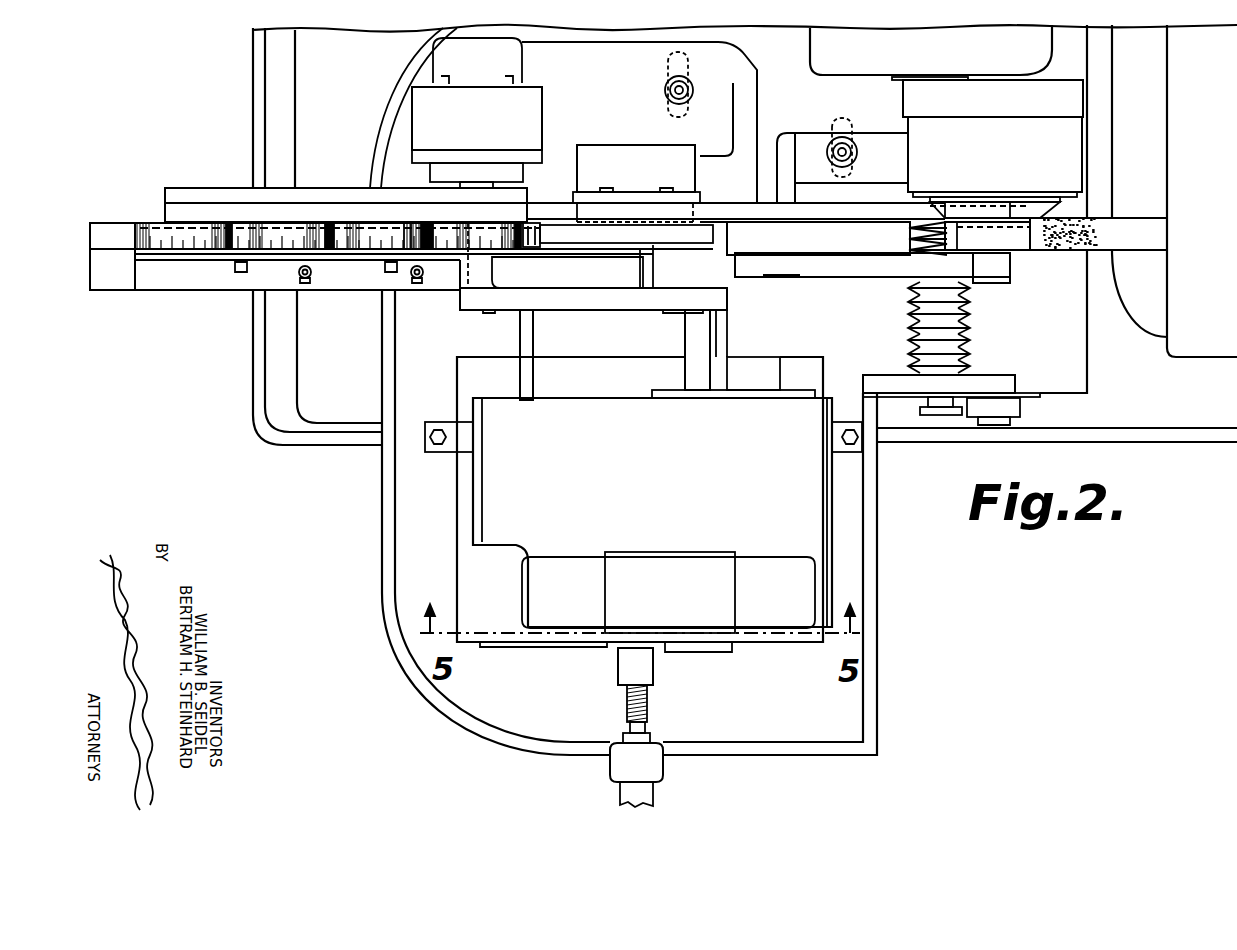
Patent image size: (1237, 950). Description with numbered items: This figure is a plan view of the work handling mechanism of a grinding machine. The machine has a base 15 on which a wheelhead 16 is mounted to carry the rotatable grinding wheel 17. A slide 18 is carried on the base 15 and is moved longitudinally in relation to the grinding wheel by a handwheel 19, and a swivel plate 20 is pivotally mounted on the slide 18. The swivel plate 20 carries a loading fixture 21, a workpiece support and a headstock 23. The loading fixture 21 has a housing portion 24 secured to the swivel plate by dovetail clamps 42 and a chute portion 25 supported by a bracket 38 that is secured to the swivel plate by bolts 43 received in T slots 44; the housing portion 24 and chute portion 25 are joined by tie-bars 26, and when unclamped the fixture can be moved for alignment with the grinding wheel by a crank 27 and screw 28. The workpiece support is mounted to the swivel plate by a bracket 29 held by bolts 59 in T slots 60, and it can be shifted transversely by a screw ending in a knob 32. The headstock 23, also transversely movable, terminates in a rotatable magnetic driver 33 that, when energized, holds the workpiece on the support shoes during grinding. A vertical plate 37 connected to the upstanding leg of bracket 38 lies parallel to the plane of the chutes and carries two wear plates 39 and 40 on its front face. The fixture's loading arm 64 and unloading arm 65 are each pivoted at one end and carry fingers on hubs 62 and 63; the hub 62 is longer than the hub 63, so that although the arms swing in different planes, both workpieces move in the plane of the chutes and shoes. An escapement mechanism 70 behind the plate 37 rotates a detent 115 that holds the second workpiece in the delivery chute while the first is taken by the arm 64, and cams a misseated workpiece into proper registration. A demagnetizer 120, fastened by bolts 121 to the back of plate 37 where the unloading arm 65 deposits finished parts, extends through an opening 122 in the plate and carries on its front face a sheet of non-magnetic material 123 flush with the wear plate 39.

The base 15 is at (253, 320).
The wheelhead 16 is at (1168, 57).
The grinding wheel 17 is at (1073, 252).
The slide 18 is at (297, 385).
The handwheel 19 is at (540, 242).
The swivel plate 20 is at (380, 375).
The loading fixture 21 is at (457, 505).
The headstock 23 is at (976, 107).
The housing portion 24 is at (659, 488).
The chute portion 25 is at (183, 258).
The tie-bars 26 is at (520, 328).
The crank 27 is at (620, 793).
The screw 28 is at (647, 700).
The bracket 29 is at (800, 133).
The knob 32 is at (940, 412).
The magnetic driver 33 is at (1060, 215).
The vertical plate 37 is at (165, 207).
The bracket 38 is at (740, 54).
The wear plate 39 is at (212, 220).
The wear plate 40 is at (858, 217).
The dovetail clamps 42 is at (426, 422).
The bolts 43 is at (665, 92).
The T slots 44 is at (690, 60).
The bolts 59 is at (852, 148).
The T slots 60 is at (842, 118).
The hub 62 is at (493, 272).
The hub 63 is at (998, 277).
The loading arm 64 is at (590, 308).
The unloading arm 65 is at (876, 278).
The escapement mechanism 70 is at (482, 127).
The detent 115 is at (408, 222).
The demagnetizer 120 is at (628, 167).
The bolts 121 is at (664, 187).
The opening 122 is at (573, 210).
The sheet of non-magnetic material 123 is at (603, 217).